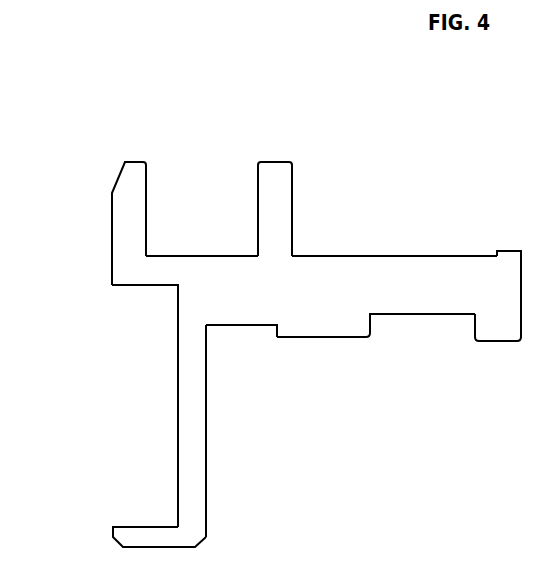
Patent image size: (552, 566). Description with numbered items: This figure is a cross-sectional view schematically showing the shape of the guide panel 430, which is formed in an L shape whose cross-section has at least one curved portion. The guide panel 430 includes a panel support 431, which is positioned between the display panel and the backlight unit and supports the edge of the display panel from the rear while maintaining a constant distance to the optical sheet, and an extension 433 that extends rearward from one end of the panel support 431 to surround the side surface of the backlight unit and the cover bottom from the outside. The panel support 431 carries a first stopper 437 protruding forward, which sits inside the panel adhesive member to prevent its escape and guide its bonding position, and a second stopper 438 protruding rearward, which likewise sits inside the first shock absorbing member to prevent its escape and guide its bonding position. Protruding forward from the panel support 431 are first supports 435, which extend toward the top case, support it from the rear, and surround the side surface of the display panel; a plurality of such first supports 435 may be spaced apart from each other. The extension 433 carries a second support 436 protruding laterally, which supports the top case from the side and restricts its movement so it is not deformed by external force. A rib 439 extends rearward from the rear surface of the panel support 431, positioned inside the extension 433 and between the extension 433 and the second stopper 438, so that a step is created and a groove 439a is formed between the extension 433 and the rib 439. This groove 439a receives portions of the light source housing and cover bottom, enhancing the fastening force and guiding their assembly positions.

The guide panel 430 is at (48, 125).
The panel support 431 is at (232, 287).
The extension 433 is at (187, 421).
The first support 435 is at (123, 217).
The second support 436 is at (122, 534).
The first stopper 437 is at (507, 257).
The second stopper 438 is at (498, 332).
The rib 439 is at (326, 328).
The groove 439a is at (253, 333).